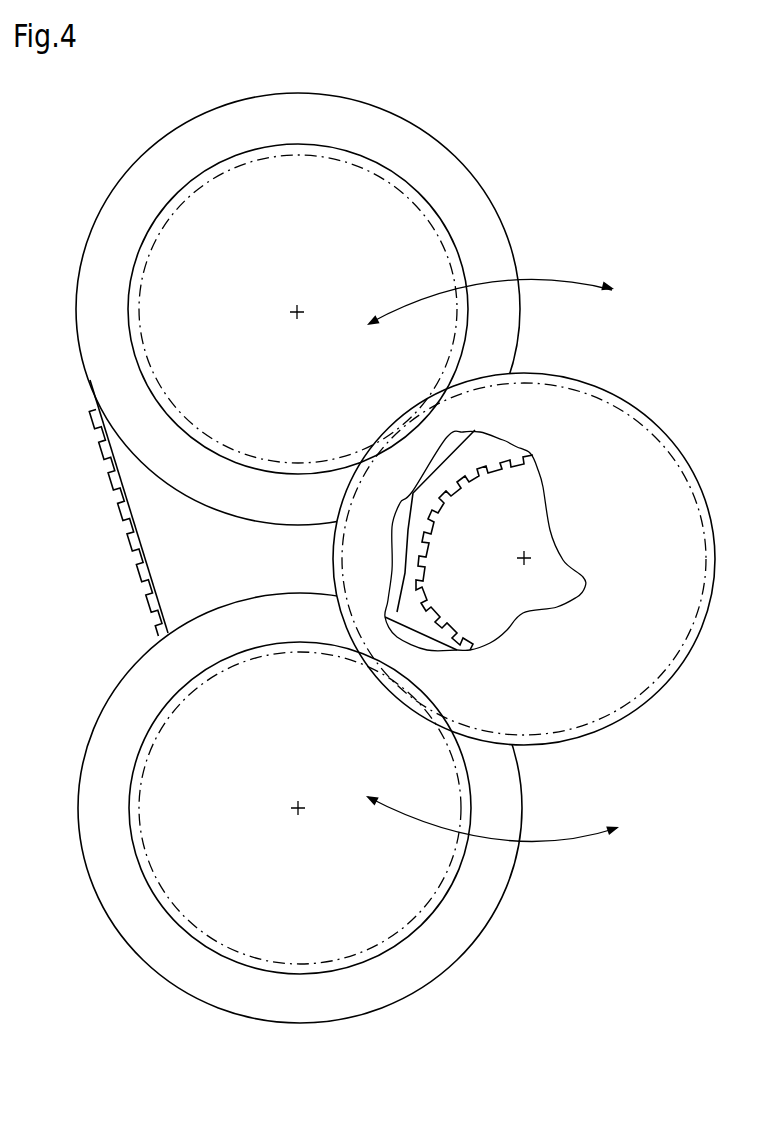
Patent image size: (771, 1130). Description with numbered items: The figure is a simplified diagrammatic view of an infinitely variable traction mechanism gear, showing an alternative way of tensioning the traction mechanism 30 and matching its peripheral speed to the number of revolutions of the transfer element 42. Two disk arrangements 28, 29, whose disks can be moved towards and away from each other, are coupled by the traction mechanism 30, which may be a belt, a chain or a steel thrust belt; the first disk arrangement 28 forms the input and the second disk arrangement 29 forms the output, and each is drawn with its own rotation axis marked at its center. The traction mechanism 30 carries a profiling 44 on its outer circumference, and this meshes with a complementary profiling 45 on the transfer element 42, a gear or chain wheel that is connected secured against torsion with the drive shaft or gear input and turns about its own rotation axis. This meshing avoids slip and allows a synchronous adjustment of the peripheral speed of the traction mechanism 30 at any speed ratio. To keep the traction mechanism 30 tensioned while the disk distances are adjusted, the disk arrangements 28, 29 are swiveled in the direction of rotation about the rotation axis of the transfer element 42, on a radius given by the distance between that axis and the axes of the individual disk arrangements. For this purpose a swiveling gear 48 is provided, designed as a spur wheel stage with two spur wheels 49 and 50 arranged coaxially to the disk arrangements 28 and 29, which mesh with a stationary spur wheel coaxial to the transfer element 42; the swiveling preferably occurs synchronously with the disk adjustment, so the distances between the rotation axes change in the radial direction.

The first disk arrangement 28 is at (492, 892).
The second disk arrangement 29 is at (488, 214).
The traction mechanism 30 is at (138, 577).
The transfer element 42 is at (499, 598).
The profiling 44 is at (113, 478).
The profiling 45 is at (517, 447).
The swiveling gear 48 is at (632, 384).
The spur wheel 49 is at (470, 314).
The spur wheel 50 is at (470, 787).